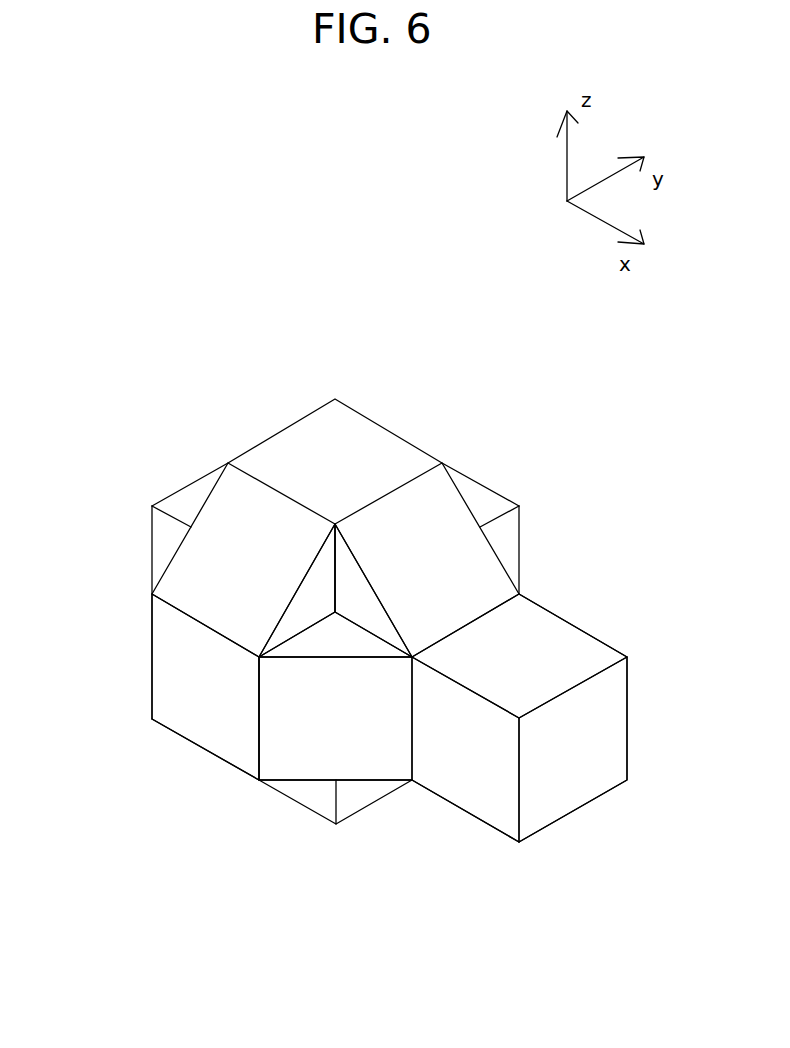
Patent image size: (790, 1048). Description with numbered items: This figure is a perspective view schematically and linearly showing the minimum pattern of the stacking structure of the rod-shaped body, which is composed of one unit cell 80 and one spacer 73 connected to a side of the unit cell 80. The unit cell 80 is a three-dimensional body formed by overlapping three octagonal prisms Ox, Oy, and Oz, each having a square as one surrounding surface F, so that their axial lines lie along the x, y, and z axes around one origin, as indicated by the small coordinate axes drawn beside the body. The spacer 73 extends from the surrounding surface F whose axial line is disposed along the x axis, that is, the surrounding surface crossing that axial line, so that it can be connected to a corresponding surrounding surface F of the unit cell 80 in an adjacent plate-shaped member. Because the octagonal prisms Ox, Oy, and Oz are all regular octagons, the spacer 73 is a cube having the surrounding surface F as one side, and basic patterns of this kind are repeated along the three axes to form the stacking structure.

The unit cell 80 is at (508, 460).
The spacer 73 is at (572, 620).
The surrounding surface F is at (190, 683).
The octagonal prism Ox is at (308, 597).
The octagonal prism Oy is at (362, 597).
The octagonal prism Oz is at (328, 640).